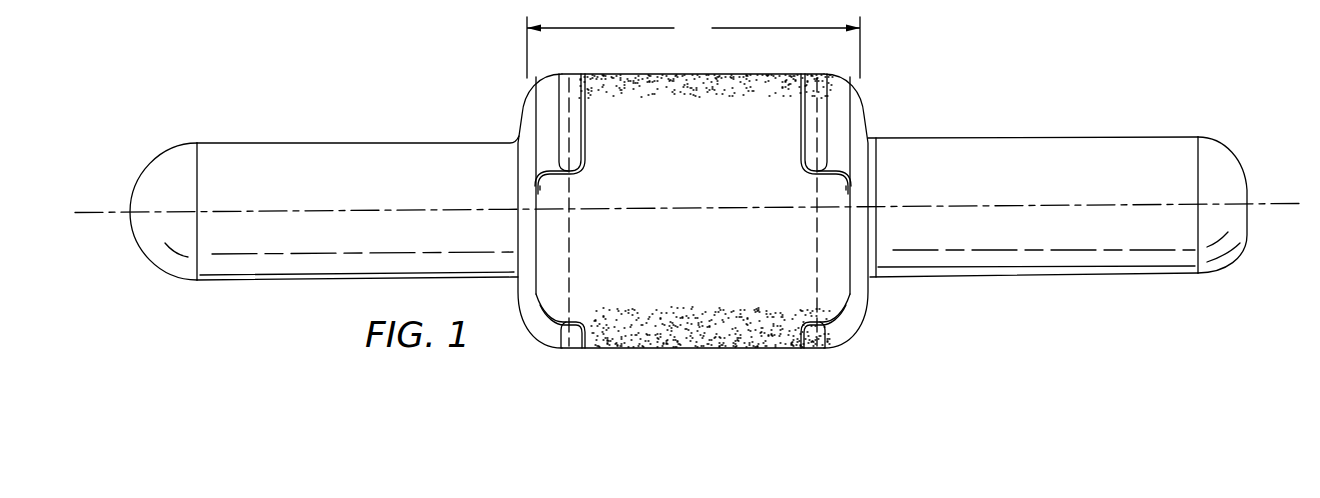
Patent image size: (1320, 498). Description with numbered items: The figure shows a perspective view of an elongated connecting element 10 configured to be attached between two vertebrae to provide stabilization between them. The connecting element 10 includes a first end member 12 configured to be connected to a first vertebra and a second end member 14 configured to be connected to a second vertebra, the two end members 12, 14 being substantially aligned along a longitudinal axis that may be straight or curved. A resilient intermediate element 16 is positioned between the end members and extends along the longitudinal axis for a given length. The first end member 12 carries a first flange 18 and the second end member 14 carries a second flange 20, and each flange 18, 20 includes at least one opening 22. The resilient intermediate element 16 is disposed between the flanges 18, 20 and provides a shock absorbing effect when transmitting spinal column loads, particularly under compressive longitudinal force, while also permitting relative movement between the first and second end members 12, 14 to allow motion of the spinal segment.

The elongated connecting element 10 is at (270, 93).
The first end member 12 is at (1077, 150).
The second end member 14 is at (357, 156).
The resilient intermediate element 16 is at (696, 352).
The first flange 18 is at (864, 110).
The second flange 20 is at (527, 108).
The opening 22 is at (566, 184).